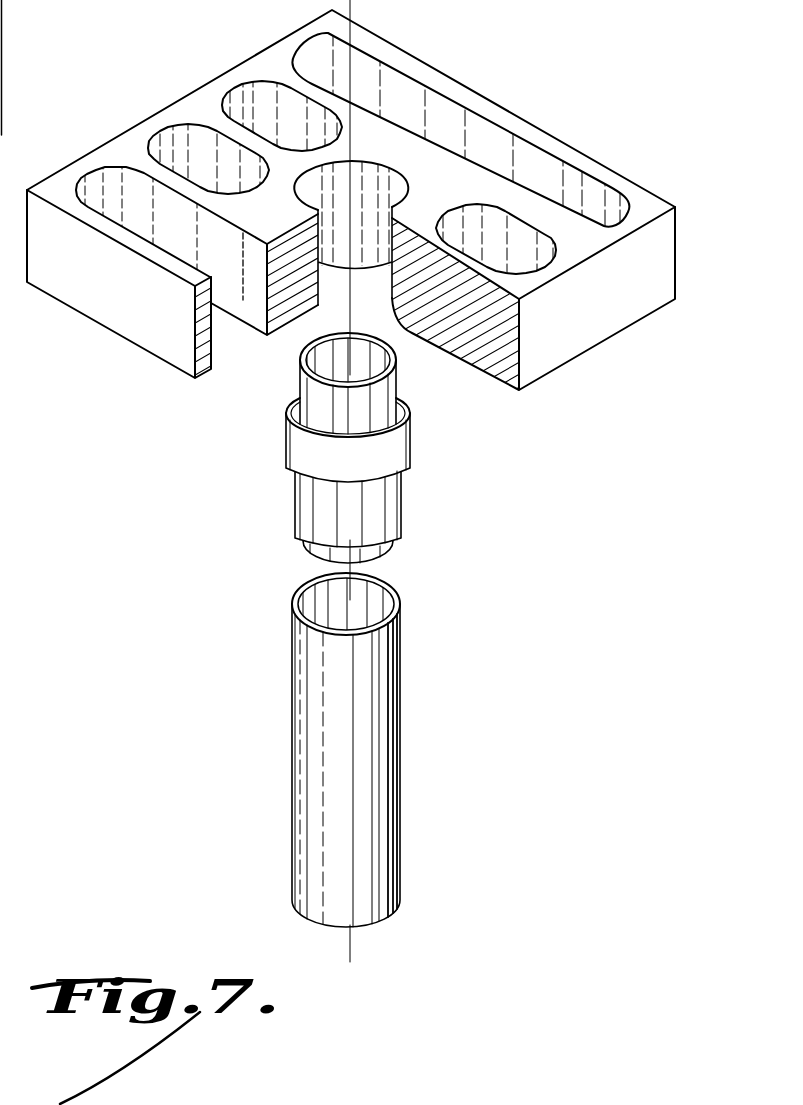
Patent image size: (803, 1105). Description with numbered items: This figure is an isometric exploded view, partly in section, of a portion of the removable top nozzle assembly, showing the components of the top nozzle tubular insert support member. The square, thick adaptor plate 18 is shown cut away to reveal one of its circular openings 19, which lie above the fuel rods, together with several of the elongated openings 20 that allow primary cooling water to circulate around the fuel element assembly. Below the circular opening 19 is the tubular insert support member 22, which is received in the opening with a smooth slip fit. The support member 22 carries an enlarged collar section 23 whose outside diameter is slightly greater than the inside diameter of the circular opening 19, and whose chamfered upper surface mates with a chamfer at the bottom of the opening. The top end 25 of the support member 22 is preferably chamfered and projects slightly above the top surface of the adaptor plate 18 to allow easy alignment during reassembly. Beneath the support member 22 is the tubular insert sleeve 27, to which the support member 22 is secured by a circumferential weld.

The adaptor plate 18 is at (668, 257).
The circular openings 19 is at (403, 136).
The elongated openings 20 is at (182, 133).
The tubular insert support member 22 is at (418, 494).
The enlarged collar section 23 is at (407, 437).
The top end 25 is at (393, 359).
The tubular insert sleeve 27 is at (390, 750).